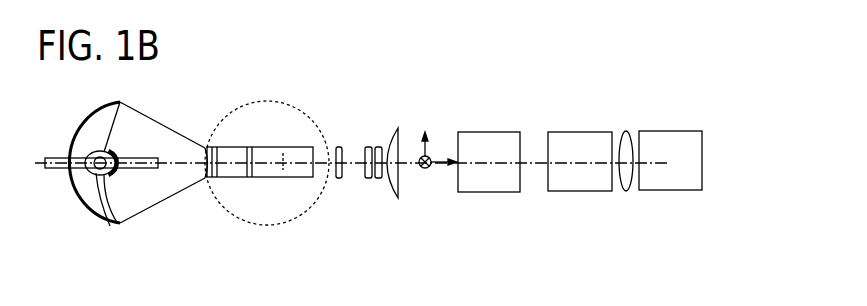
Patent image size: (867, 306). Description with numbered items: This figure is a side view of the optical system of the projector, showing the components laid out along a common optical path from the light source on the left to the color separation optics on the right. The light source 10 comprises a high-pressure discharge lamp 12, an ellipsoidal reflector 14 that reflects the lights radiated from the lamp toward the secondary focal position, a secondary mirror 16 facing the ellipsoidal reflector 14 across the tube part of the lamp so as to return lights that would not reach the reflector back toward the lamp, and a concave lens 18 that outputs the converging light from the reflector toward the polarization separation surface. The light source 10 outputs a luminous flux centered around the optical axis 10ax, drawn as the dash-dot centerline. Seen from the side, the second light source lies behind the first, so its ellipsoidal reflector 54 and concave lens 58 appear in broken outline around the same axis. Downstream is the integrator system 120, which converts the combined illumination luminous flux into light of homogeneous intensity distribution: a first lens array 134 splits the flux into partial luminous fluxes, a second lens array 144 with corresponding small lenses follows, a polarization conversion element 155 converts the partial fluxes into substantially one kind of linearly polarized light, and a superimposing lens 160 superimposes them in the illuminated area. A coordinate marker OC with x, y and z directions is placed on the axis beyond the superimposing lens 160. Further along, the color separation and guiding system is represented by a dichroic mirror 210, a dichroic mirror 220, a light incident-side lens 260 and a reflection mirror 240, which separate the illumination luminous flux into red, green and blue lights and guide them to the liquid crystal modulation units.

The light source 10 is at (126, 195).
The optical axis 10ax is at (40, 158).
The high-pressure discharge lamp 12 is at (115, 180).
The ellipsoidal reflector 14 is at (90, 205).
The secondary mirror 16 is at (138, 190).
The concave lens 18 is at (189, 205).
The ellipsoidal reflector 54 is at (272, 186).
The concave lens 58 is at (284, 172).
The integrator system 120 is at (367, 141).
The first lens array 134 is at (338, 146).
The second lens array 144 is at (370, 147).
The polarization conversion element 155 is at (380, 178).
The superimposing lens 160 is at (395, 199).
The optical center (coordinate origin) OC is at (407, 152).
The dichroic mirror 210 is at (490, 192).
The dichroic mirror 220 is at (582, 192).
The light incident-side lens 260 is at (626, 191).
The reflection mirror 240 is at (673, 192).